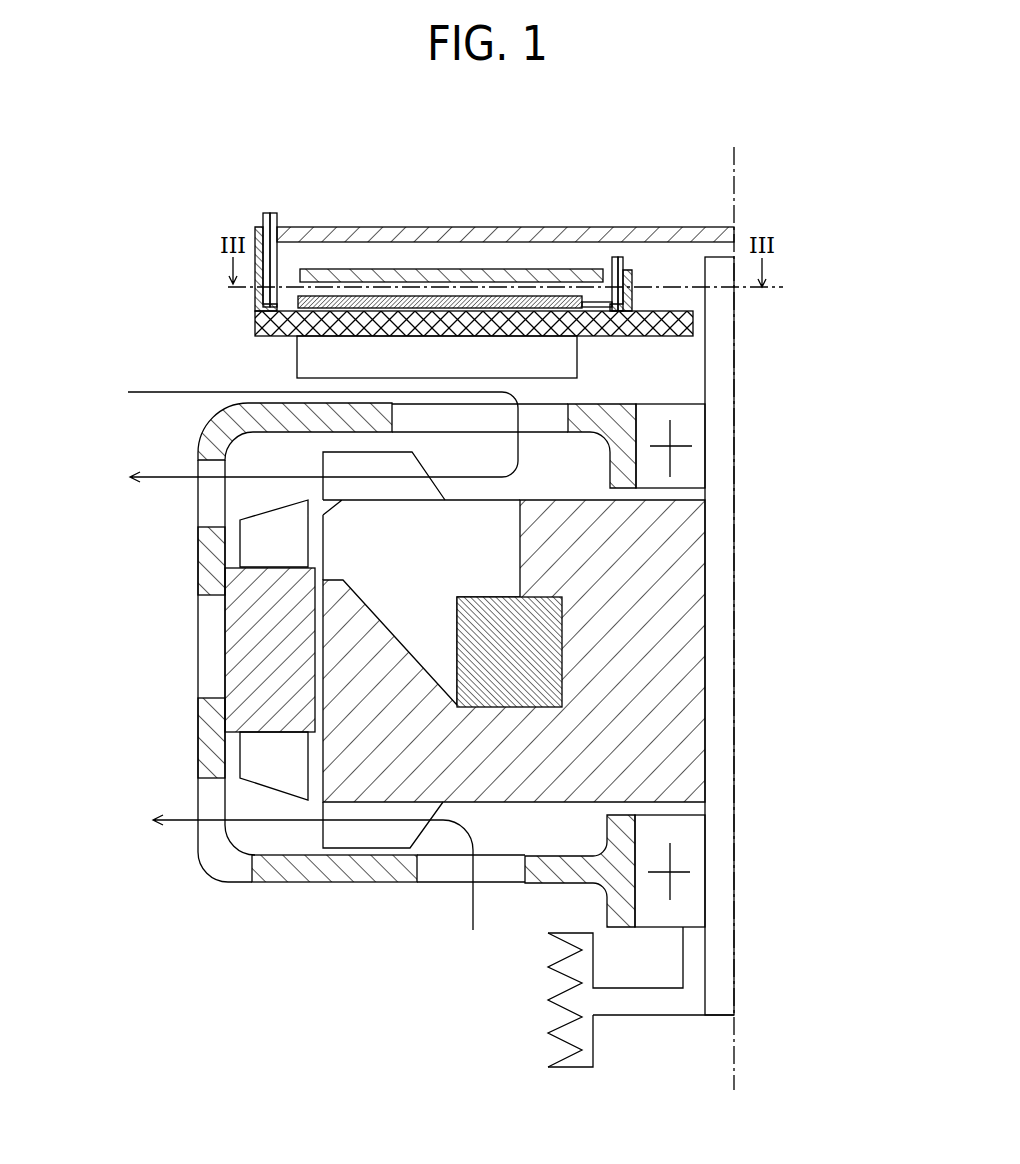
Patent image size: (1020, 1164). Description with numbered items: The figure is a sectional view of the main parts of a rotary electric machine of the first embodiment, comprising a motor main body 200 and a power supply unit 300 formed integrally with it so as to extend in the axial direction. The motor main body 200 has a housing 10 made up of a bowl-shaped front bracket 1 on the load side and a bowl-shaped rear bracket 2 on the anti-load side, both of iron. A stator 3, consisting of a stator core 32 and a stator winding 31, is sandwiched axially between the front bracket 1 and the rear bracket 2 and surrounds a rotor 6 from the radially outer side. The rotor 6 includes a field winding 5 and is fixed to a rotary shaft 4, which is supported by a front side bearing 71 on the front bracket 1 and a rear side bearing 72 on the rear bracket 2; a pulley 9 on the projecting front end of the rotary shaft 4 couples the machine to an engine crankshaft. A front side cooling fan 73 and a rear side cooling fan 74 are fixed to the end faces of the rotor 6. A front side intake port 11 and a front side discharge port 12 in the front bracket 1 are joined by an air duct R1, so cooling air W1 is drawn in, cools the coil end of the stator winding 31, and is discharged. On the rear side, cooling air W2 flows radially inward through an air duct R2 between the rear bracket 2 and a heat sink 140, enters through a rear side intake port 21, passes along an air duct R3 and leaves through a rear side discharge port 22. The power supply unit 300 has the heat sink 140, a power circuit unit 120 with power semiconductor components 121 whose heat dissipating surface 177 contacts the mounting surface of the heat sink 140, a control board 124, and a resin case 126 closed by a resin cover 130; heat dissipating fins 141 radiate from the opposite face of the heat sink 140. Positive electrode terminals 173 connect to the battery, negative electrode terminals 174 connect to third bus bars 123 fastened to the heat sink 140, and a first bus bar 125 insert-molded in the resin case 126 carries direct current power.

The power supply unit 300 is at (140, 238).
The resin cover 130 is at (713, 236).
The power circuit unit 120 is at (406, 227).
The third bus bar 123 is at (268, 217).
The negative electrode terminal 174 is at (270, 217).
The resin case 126 is at (252, 232).
The power semiconductor component 121 is at (442, 292).
The control board 124 is at (515, 277).
The heat dissipating surface 177 is at (401, 300).
The positive electrode terminal 173 is at (612, 257).
The first bus bar 125 is at (623, 258).
The heat sink 140 is at (677, 328).
The heat dissipating fin 141 is at (533, 370).
The rotary shaft 4 is at (722, 716).
The motor main body 200 is at (118, 627).
The housing 10 is at (262, 890).
The rear side discharge port 22 is at (212, 513).
The front side discharge port 12 is at (212, 823).
The front bracket 1 is at (343, 870).
The front side intake port 11 is at (507, 877).
The rear bracket 2 is at (627, 462).
The rear side intake port 21 is at (540, 415).
The rear side bearing 72 is at (693, 483).
The front side bearing 71 is at (688, 855).
The rear side cooling fan 74 is at (333, 485).
The front side cooling fan 73 is at (390, 842).
The rotor 6 is at (653, 570).
The field winding 5 is at (533, 650).
The stator 3 is at (92, 667).
The stator core 32 is at (240, 655).
The stator winding 31 is at (265, 740).
The pulley 9 is at (662, 1002).
The cooling air W2 is at (302, 430).
The cooling air W1 is at (324, 887).
The air duct R1 is at (297, 842).
The air duct R2 is at (280, 378).
The air duct R3 is at (282, 450).